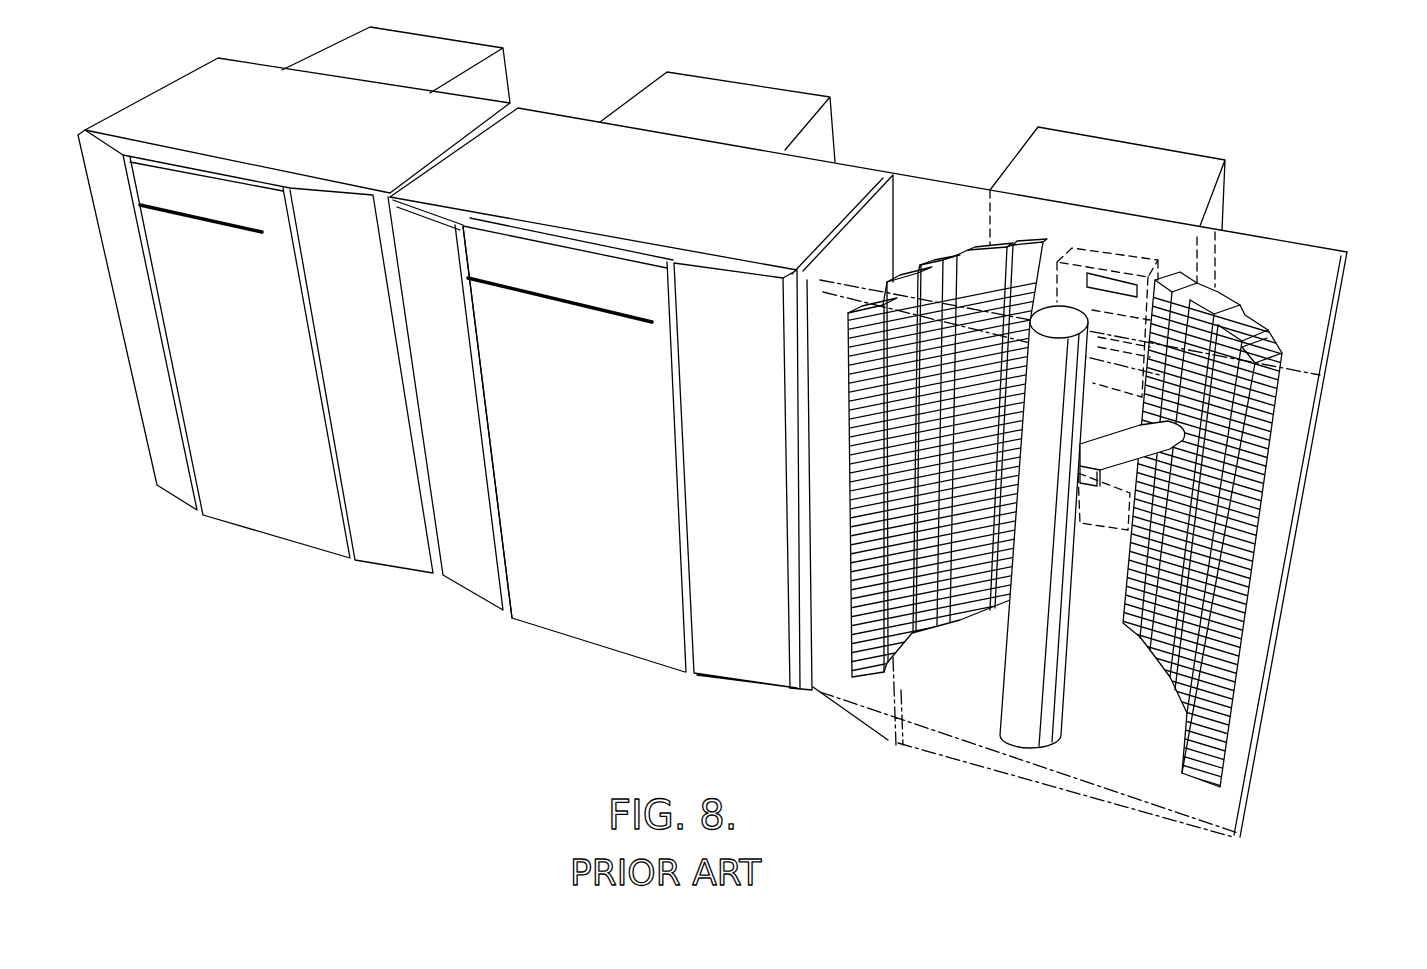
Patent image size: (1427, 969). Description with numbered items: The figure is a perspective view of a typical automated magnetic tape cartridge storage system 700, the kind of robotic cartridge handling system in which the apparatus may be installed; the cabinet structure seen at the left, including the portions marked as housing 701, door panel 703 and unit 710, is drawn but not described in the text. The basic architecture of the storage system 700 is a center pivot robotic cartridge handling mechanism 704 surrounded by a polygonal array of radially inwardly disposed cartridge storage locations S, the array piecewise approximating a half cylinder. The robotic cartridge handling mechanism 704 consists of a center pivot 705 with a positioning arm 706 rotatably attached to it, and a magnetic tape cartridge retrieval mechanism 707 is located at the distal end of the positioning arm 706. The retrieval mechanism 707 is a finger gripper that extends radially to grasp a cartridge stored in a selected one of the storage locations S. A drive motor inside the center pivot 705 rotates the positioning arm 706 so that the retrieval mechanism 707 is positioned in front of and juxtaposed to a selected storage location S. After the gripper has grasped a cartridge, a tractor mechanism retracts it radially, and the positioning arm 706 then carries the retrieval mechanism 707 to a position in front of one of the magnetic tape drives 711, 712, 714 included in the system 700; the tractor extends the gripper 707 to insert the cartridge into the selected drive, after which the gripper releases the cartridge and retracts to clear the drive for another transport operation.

The automated magnetic tape cartridge storage system 700 is at (1260, 177).
The housing 701 is at (958, 192).
The door panel 703 is at (560, 237).
The robotic cartridge handling mechanism 704 is at (977, 715).
The center pivot 705 is at (1017, 648).
The positioning arm 706 is at (1150, 455).
The magnetic tape cartridge retrieval mechanism 707 is at (1185, 432).
The drive unit 710 is at (1097, 145).
The magnetic tape drive 711 is at (1092, 253).
The magnetic tape drive 712 is at (1128, 337).
The magnetic tape drive 714 is at (1108, 530).
The cartridge storage locations S is at (950, 257).